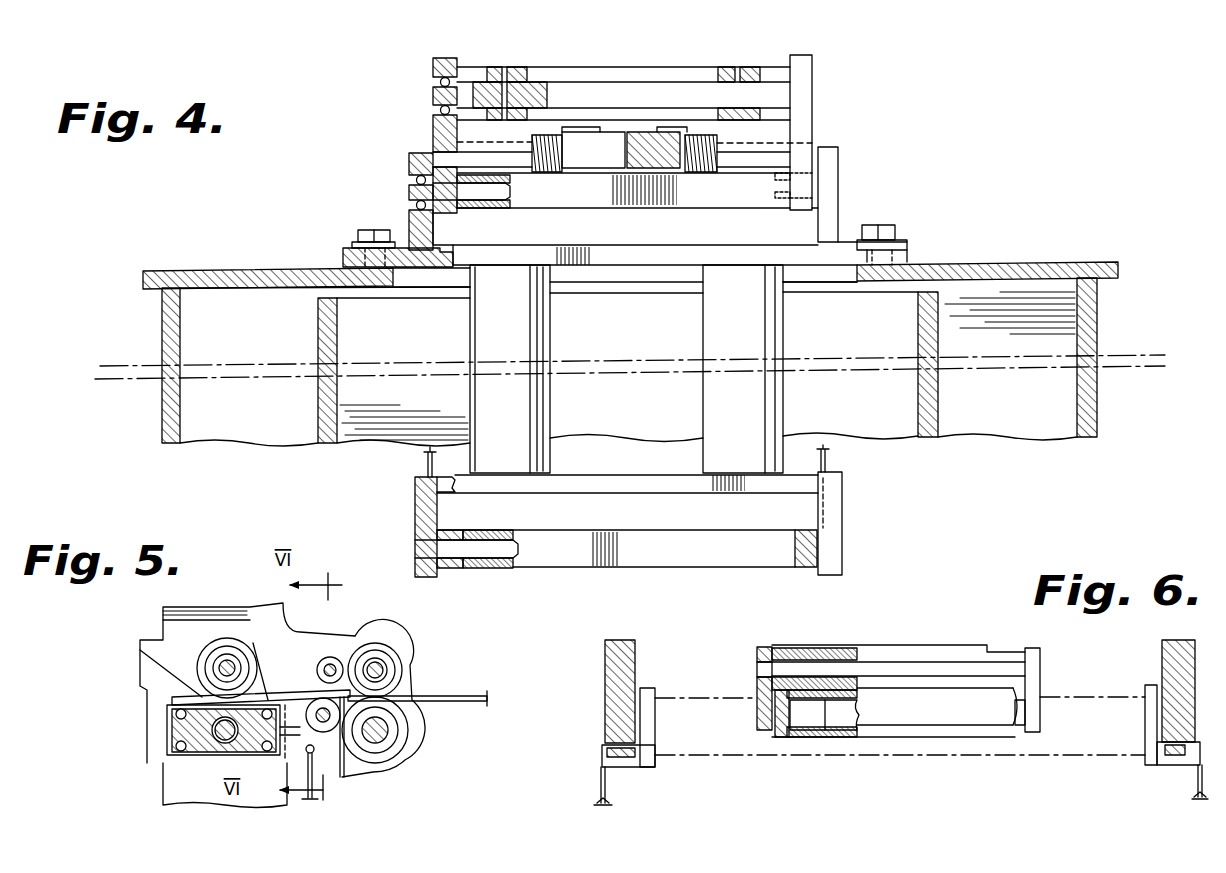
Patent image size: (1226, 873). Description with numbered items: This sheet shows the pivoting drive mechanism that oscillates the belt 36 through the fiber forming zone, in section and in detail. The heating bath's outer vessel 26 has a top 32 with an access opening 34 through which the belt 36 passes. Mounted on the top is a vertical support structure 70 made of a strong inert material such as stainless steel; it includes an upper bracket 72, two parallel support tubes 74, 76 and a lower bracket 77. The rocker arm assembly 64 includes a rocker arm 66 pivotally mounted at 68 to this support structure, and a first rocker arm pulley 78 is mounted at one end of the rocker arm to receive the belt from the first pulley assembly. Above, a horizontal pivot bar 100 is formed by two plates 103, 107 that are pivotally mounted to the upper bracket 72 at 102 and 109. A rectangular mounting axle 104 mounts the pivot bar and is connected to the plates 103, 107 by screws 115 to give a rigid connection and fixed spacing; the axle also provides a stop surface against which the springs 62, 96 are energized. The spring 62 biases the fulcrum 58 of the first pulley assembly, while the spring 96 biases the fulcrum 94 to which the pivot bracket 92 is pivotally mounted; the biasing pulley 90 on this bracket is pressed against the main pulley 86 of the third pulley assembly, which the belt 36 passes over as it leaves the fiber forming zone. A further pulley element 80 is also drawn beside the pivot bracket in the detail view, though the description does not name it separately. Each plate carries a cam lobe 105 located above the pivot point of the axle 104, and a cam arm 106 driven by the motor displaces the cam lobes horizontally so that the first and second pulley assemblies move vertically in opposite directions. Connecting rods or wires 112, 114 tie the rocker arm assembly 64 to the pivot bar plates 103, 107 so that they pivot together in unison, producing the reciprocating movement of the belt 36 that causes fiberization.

In FIG. 4, the outer vessel 26 is at (1097, 420).
In FIG. 4, the top 32 is at (1058, 262).
In FIG. 4, the access opening 34 is at (840, 282).
In FIG. 5, the belt 36 is at (472, 696).
In FIG. 4, the fulcrum 58 is at (652, 150).
In FIG. 5, the fulcrum 58 is at (170, 660).
In FIG. 4, the spring 62 is at (710, 160).
In FIG. 5, the spring 62 is at (176, 625).
In FIG. 4, the rocker arm assembly 64 is at (662, 520).
In FIG. 4, the rocker arm 66 is at (500, 567).
In FIG. 4, the pivotal mounting 68 is at (420, 550).
In FIG. 4, the vertical support structure 70 is at (650, 376).
In FIG. 4, the upper bracket 72 is at (838, 210).
In FIG. 5, the upper bracket 72 is at (180, 783).
In FIG. 4, the support tube 74 is at (495, 395).
In FIG. 4, the support tube 76 is at (735, 395).
In FIG. 4, the lower bracket 77 is at (628, 487).
In FIG. 4, the first rocker arm pulley 78 is at (835, 508).
In FIG. 5, the gear 80 is at (395, 655).
In FIG. 5, the main pulley 86 is at (405, 728).
In FIG. 6, the main pulley 86 is at (760, 757).
In FIG. 5, the biasing pulley 90 is at (297, 713).
In FIG. 6, the biasing pulley 90 is at (955, 707).
In FIG. 5, the pivot bracket 92 is at (347, 650).
In FIG. 6, the pivot bracket 92 is at (765, 648).
In FIG. 4, the fulcrum 94 is at (580, 155).
In FIG. 5, the fulcrum 94 is at (300, 652).
In FIG. 6, the fulcrum 94 is at (925, 657).
In FIG. 4, the spring 96 is at (560, 132).
In FIG. 5, the spring 96 is at (250, 617).
In FIG. 4, the horizontal pivot bar 100 is at (616, 137).
In FIG. 4, the pivotal mounting 102 is at (409, 192).
In FIG. 5, the pivotal mounting 102 is at (220, 735).
In FIG. 4, the plate 103 is at (435, 130).
In FIG. 6, the plate 103 is at (627, 663).
In FIG. 4, the rectangular mounting axle 104 is at (607, 197).
In FIG. 5, the rectangular mounting axle 104 is at (200, 698).
In FIG. 4, the cam lobe 105 is at (440, 60).
In FIG. 4, the cam arm 106 is at (665, 67).
In FIG. 4, the plate 107 is at (812, 108).
In FIG. 6, the plate 107 is at (1175, 657).
In FIG. 4, the pivotal mounting 109 is at (818, 185).
In FIG. 4, the connecting rod 112 is at (427, 455).
In FIG. 4, the connecting rod 114 is at (827, 460).
In FIG. 5, the connecting rod 114 is at (325, 791).
In FIG. 6, the connecting rod 114 is at (603, 790).
In FIG. 4, the screw 115 is at (803, 173).
In FIG. 5, the screw 115 is at (160, 650).